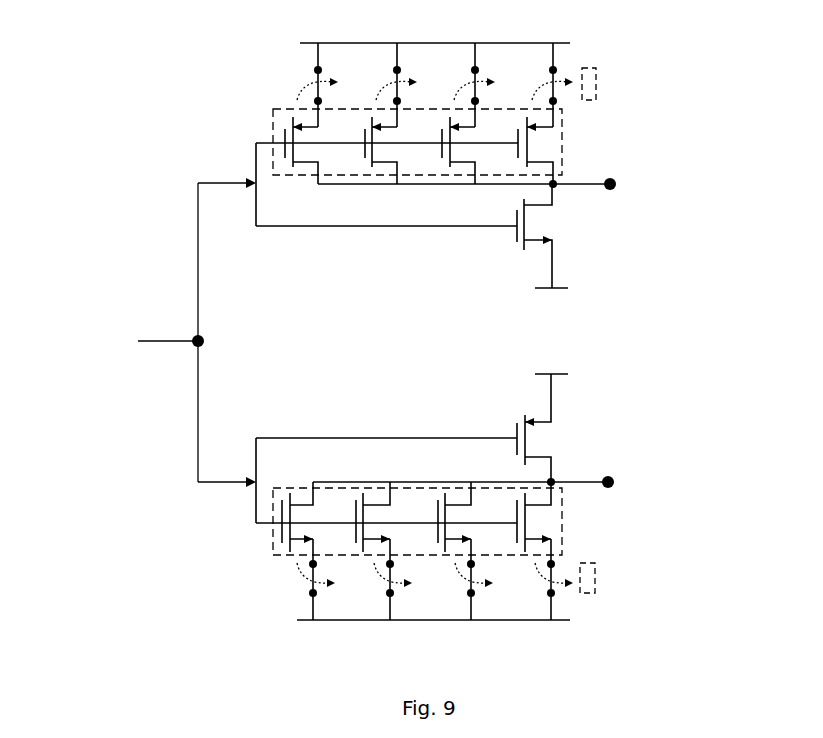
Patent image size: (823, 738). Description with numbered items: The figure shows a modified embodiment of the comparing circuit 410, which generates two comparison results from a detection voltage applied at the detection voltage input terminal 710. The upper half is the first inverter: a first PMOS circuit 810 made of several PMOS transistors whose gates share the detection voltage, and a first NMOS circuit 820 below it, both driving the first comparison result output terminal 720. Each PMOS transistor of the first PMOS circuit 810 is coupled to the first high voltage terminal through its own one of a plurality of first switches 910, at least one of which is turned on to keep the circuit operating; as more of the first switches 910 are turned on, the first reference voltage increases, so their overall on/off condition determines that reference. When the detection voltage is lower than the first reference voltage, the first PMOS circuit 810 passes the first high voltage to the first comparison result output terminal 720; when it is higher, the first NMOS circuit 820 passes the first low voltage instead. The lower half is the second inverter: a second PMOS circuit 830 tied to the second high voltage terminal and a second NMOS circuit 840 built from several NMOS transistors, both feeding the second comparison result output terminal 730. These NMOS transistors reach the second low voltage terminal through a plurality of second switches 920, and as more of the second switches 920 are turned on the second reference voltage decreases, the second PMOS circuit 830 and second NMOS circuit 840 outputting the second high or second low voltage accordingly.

The comparing circuit 410 is at (63, 675).
The detection voltage input terminal 710 is at (197, 337).
The first comparison result output terminal 720 is at (611, 178).
The second comparison result output terminal 730 is at (611, 476).
The first PMOS circuit 810 is at (272, 111).
The first NMOS circuit 820 is at (515, 236).
The second PMOS circuit 830 is at (527, 418).
The second NMOS circuit 840 is at (272, 553).
The first switches 910 is at (597, 86).
The second switches 920 is at (597, 578).